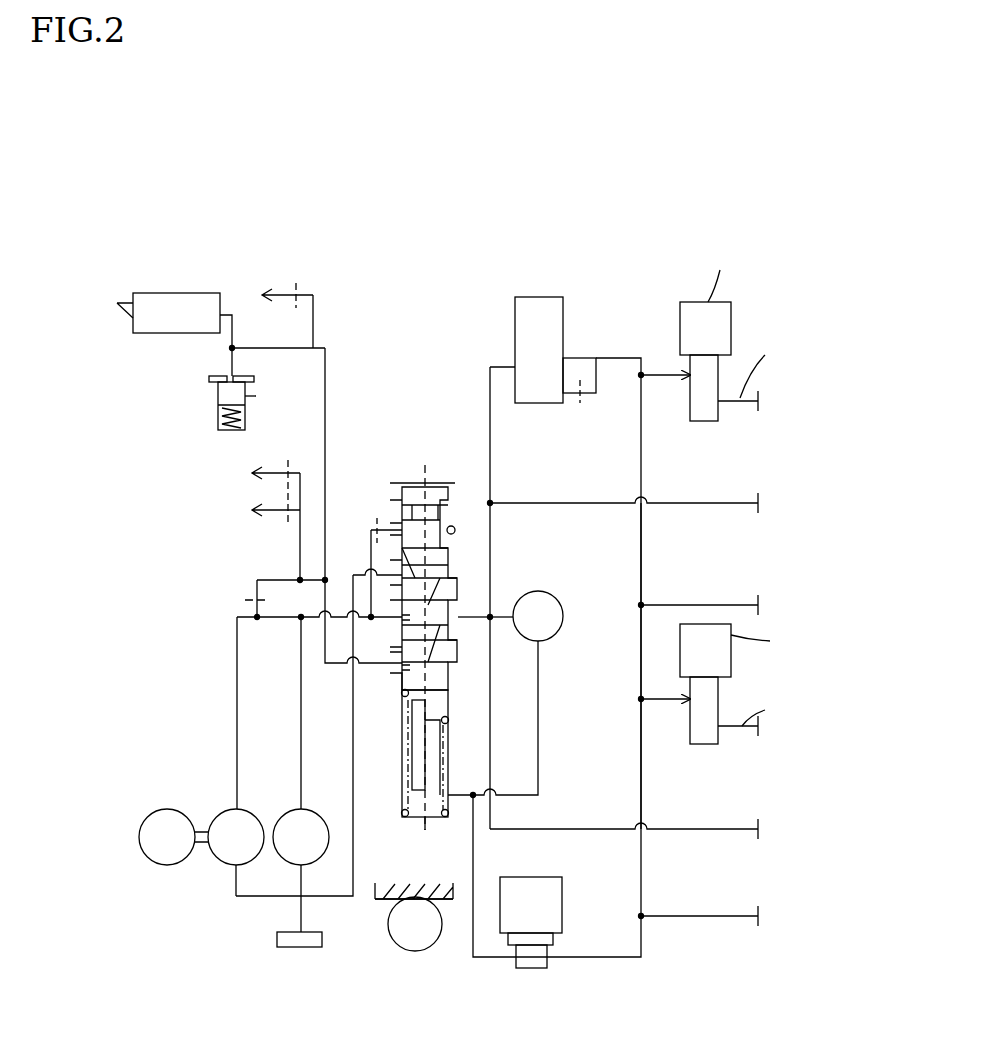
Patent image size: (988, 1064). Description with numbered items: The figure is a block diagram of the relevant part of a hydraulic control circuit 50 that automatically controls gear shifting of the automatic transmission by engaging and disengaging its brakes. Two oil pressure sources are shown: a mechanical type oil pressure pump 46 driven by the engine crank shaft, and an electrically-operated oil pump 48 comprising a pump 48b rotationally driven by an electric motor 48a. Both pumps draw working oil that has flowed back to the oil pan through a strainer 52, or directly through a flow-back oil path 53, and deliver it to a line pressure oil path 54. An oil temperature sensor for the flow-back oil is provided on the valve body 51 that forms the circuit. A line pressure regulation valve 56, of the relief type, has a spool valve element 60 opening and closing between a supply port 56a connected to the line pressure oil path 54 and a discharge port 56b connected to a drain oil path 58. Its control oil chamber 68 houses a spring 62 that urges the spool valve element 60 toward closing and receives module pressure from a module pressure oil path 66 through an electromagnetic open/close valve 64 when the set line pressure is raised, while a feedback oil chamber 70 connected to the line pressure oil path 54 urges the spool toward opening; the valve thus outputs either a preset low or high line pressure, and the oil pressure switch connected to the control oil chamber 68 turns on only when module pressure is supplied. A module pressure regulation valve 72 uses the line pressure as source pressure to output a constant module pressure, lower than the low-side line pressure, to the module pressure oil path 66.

The hydraulic control circuit 50 is at (206, 210).
The module pressure regulation valve 72 is at (520, 318).
The line pressure oil path 54 is at (240, 616).
The drain oil path 58 is at (328, 421).
The flow-back oil path 53 is at (352, 765).
The line pressure regulation valve 56 is at (414, 466).
The supply port 56a is at (393, 622).
The discharge port 56b is at (393, 667).
The feedback oil chamber 70 is at (454, 530).
The spool valve element 60 is at (442, 683).
The spring 62 is at (401, 811).
The control oil chamber 68 is at (416, 818).
The valve body 51 is at (430, 884).
The electrically-operated oil pump 48 is at (196, 802).
The electric motor 48a is at (150, 863).
The pump 48b is at (222, 863).
The mechanical type oil pressure pump 46 is at (290, 810).
The strainer 52 is at (322, 938).
The electromagnetic open/close valve 64 is at (557, 905).
The module pressure oil path 66 is at (641, 570).